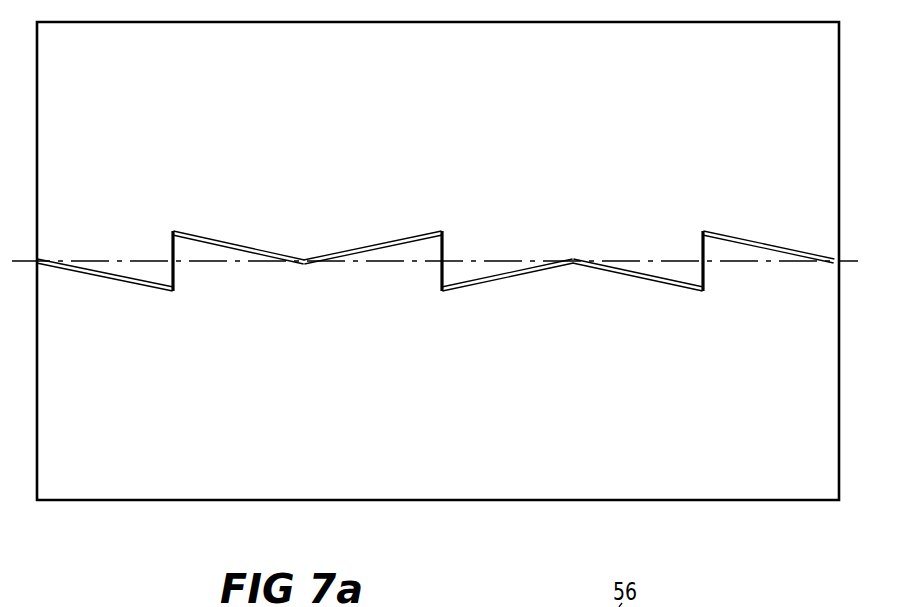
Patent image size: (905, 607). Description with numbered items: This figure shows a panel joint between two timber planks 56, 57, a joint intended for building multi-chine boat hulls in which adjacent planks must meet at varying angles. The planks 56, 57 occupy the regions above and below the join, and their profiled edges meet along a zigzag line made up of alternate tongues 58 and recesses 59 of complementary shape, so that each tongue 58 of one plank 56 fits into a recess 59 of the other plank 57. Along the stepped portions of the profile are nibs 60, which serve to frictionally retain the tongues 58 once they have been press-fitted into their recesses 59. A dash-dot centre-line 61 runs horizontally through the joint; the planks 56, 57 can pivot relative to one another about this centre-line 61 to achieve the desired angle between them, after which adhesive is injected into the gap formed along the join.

The timber plank 56 is at (756, 137).
The timber plank 57 is at (664, 400).
The tongue 58 is at (592, 249).
The recess 59 is at (448, 262).
The nib 60 is at (170, 234).
The centre-line 61 is at (233, 261).